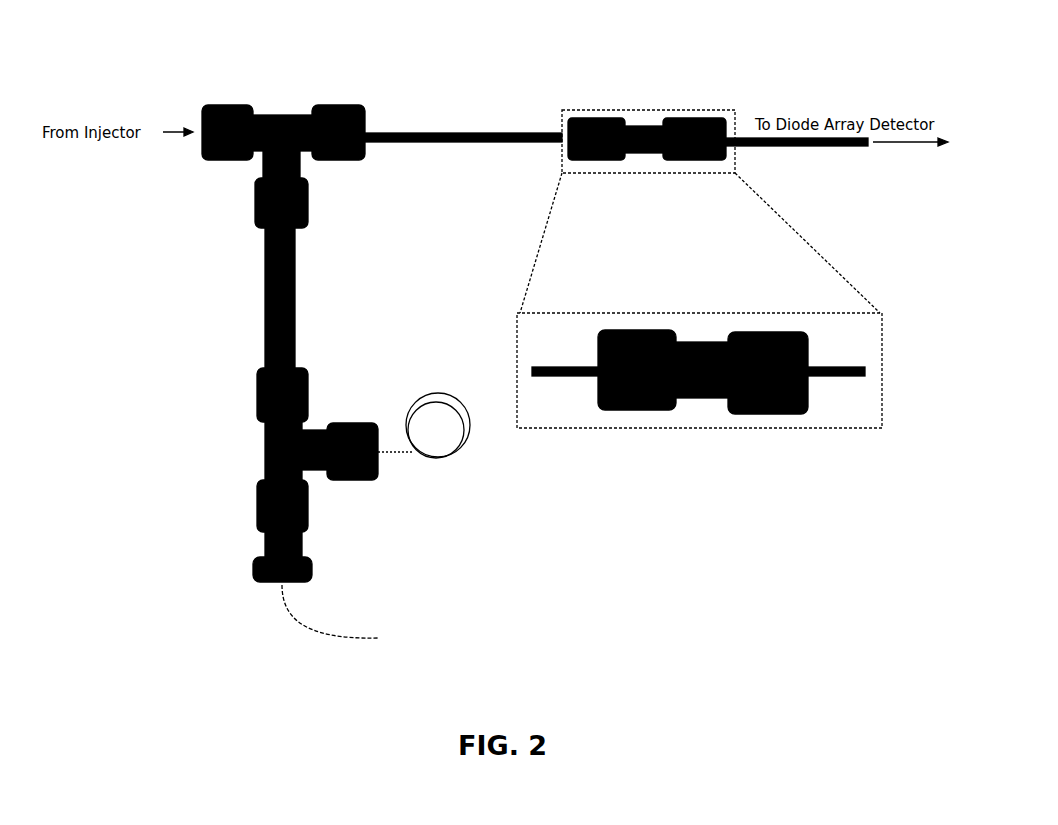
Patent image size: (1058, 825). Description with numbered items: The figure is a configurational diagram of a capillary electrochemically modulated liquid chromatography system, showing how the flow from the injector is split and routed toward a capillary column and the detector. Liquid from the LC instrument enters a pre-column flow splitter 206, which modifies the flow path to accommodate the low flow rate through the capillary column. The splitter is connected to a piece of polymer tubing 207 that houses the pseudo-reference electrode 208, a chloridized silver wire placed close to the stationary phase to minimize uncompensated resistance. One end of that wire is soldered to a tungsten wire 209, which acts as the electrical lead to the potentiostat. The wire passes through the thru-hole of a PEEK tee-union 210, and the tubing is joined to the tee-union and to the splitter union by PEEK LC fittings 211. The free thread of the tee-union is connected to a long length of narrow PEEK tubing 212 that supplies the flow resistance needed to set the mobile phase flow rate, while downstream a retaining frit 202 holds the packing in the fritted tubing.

The retaining frit 202 is at (767, 415).
The pre-column flow splitter 206 is at (290, 113).
The polymer tubing 207 is at (290, 245).
The pseudo-reference electrode 208 is at (290, 288).
The tungsten wire 209 is at (300, 617).
The tee-union 210 is at (308, 393).
The PEEK LC fittings 211 is at (302, 543).
The PEEK tubing 212 is at (442, 468).